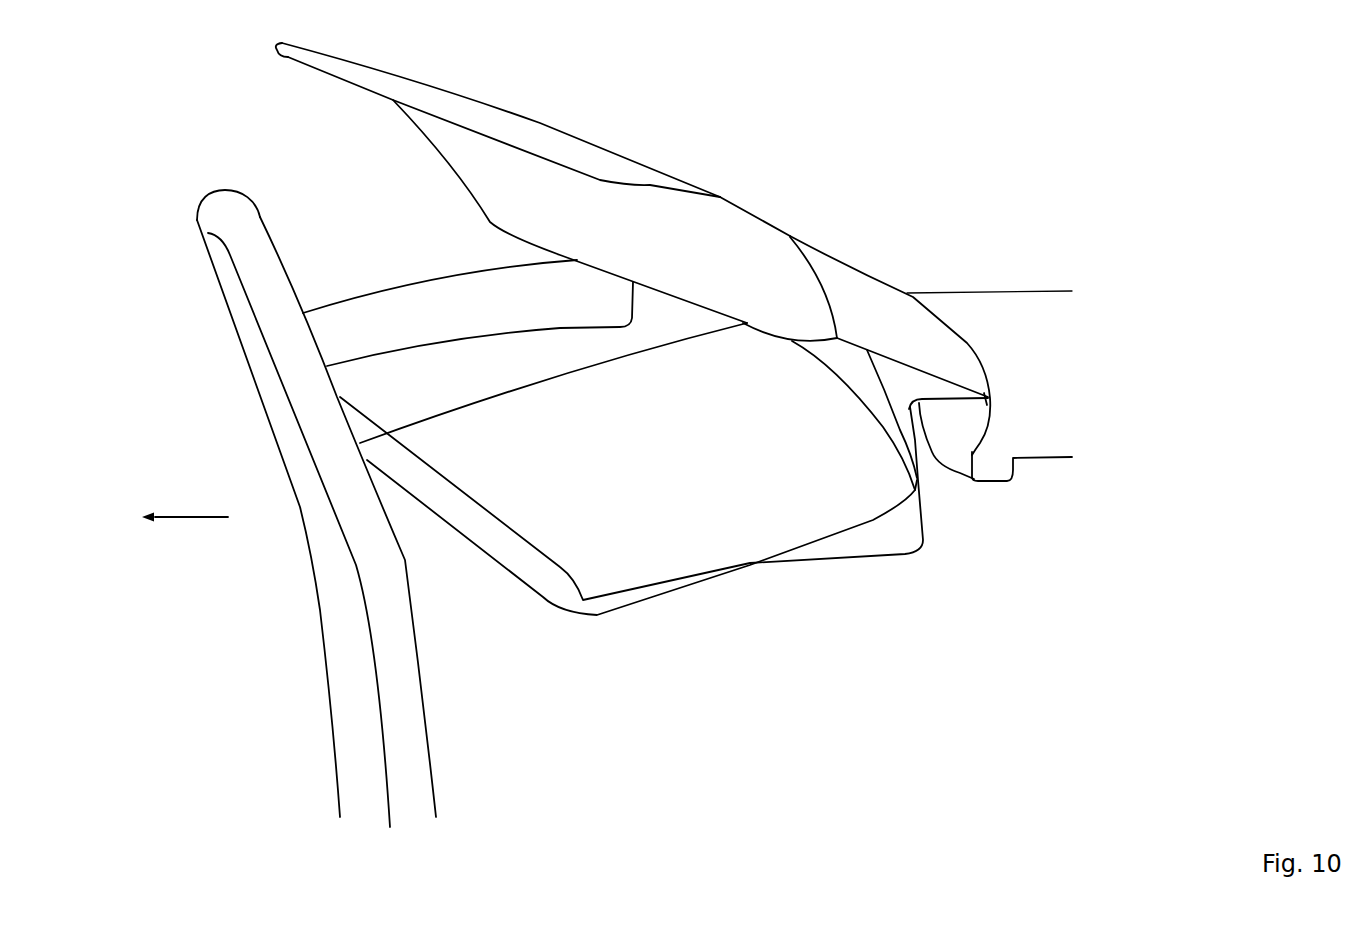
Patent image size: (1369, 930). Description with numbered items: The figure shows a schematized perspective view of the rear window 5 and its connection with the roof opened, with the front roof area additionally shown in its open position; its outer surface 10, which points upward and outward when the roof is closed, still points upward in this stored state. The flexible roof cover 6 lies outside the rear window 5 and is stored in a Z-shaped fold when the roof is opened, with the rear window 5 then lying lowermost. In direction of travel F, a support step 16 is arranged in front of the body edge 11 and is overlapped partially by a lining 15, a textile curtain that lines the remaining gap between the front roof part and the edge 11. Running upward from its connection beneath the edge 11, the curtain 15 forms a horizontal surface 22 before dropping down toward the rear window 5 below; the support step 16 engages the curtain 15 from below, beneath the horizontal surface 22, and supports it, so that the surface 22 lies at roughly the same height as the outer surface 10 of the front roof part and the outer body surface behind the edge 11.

The rear window 5 is at (657, 178).
The flexible roof cover 6 is at (862, 283).
The surface of the front roof area 10 is at (453, 338).
The edge 11 is at (947, 314).
The lining 15 is at (929, 388).
The support step 16 is at (950, 424).
The horizontal surface 22 is at (958, 390).
The direction of travel F is at (184, 517).